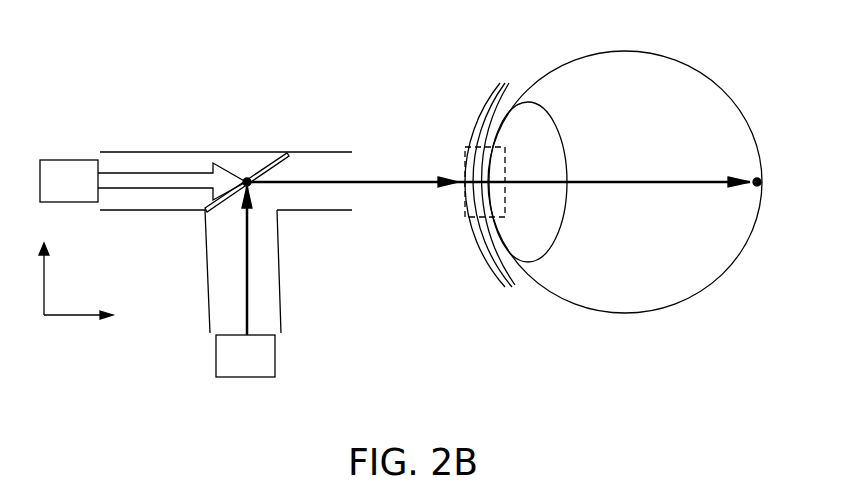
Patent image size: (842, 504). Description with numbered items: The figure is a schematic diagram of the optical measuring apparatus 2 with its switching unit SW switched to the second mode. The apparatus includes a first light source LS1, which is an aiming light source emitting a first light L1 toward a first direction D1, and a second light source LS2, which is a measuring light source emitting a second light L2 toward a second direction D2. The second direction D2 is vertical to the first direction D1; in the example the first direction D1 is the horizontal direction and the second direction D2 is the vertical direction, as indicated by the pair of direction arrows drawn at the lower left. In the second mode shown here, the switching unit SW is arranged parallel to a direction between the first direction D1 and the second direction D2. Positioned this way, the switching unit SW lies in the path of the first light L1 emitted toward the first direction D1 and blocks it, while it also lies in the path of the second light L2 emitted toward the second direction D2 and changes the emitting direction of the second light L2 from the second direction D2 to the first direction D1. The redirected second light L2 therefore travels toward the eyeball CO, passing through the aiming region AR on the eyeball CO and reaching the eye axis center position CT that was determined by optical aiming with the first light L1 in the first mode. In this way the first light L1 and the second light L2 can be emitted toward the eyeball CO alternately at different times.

The optical measuring apparatus 2 is at (74, 47).
The first light source LS1 is at (90, 196).
The second light source LS2 is at (266, 372).
The first light L1 is at (187, 183).
The second light L2 is at (496, 240).
The switching unit SW is at (270, 162).
The first direction D1 is at (93, 315).
The second direction D2 is at (45, 263).
The eyeball CO is at (590, 63).
The aiming region AR is at (470, 140).
The eye axis center position CT is at (772, 182).